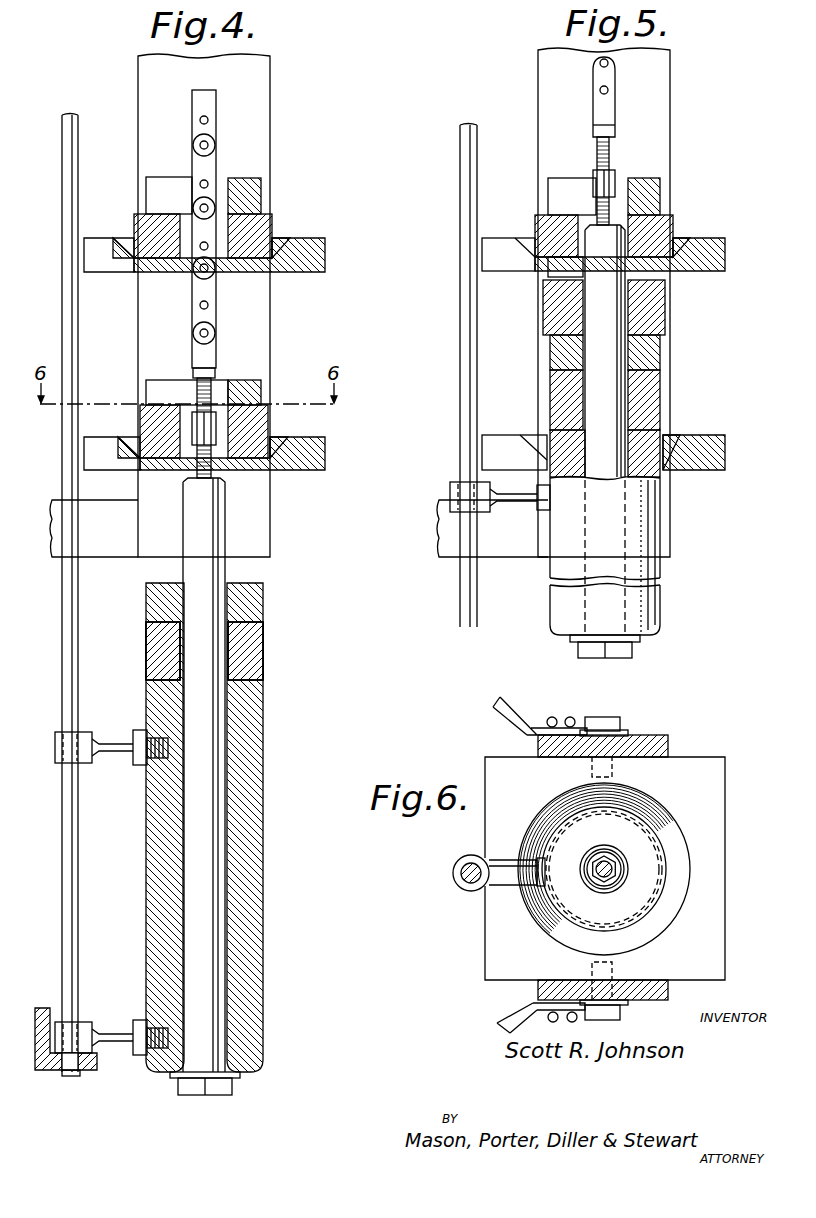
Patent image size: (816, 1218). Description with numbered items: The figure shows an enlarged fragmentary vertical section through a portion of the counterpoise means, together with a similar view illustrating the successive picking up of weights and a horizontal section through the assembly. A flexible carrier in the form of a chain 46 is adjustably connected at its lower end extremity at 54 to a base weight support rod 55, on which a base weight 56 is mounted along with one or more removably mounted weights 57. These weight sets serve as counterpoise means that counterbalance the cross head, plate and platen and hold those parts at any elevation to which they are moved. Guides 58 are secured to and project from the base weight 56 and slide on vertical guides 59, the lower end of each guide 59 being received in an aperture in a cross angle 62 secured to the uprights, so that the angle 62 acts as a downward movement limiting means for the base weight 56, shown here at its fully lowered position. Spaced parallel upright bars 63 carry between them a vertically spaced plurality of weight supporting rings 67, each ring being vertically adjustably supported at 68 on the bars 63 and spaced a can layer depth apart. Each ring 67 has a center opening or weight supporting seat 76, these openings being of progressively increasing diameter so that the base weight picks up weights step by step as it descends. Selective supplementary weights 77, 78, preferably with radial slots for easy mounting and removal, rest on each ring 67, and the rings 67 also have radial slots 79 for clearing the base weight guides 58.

In FIG. 4, the chain 46 is at (216, 112).
In FIG. 5, the chain 46 is at (615, 70).
In FIG. 4, the adjustable connection 54 is at (210, 386).
In FIG. 5, the adjustable connection 54 is at (609, 160).
In FIG. 6, the adjustable connection 54 is at (606, 878).
In FIG. 4, the base weight support rod 55 is at (225, 576).
In FIG. 5, the base weight support rod 55 is at (640, 232).
In FIG. 4, the base weight 56 is at (150, 935).
In FIG. 5, the base weight 56 is at (660, 540).
In FIG. 4, the removably mounted weight 57 is at (255, 630).
In FIG. 5, the removably mounted weight 57 is at (660, 380).
In FIG. 4, the guide 58 is at (54, 740).
In FIG. 5, the guide 58 is at (452, 482).
In FIG. 6, the guide 58 is at (466, 884).
In FIG. 4, the vertical guide 59 is at (62, 676).
In FIG. 5, the vertical guide 59 is at (460, 396).
In FIG. 6, the vertical guide 59 is at (453, 880).
In FIG. 4, the cross angle 62 is at (47, 1070).
In FIG. 4, the upright bar 63 is at (270, 150).
In FIG. 5, the upright bar 63 is at (670, 125).
In FIG. 6, the upright bar 63 is at (668, 738).
In FIG. 4, the weight supporting ring 67 is at (325, 250).
In FIG. 5, the weight supporting ring 67 is at (725, 256).
In FIG. 6, the weight supporting ring 67 is at (700, 764).
In FIG. 6, the vertically adjustable support 68 is at (620, 720).
In FIG. 4, the weight supporting seat 76 is at (125, 266).
In FIG. 5, the weight supporting seat 76 is at (680, 266).
In FIG. 6, the weight supporting seat 76 is at (646, 924).
In FIG. 4, the supplementary weight 77 is at (272, 222).
In FIG. 5, the supplementary weight 77 is at (535, 226).
In FIG. 4, the supplementary weight 78 is at (261, 195).
In FIG. 5, the supplementary weight 78 is at (555, 190).
In FIG. 4, the radial slot 79 is at (104, 268).
In FIG. 5, the radial slot 79 is at (518, 271).
In FIG. 6, the radial slot 79 is at (497, 903).